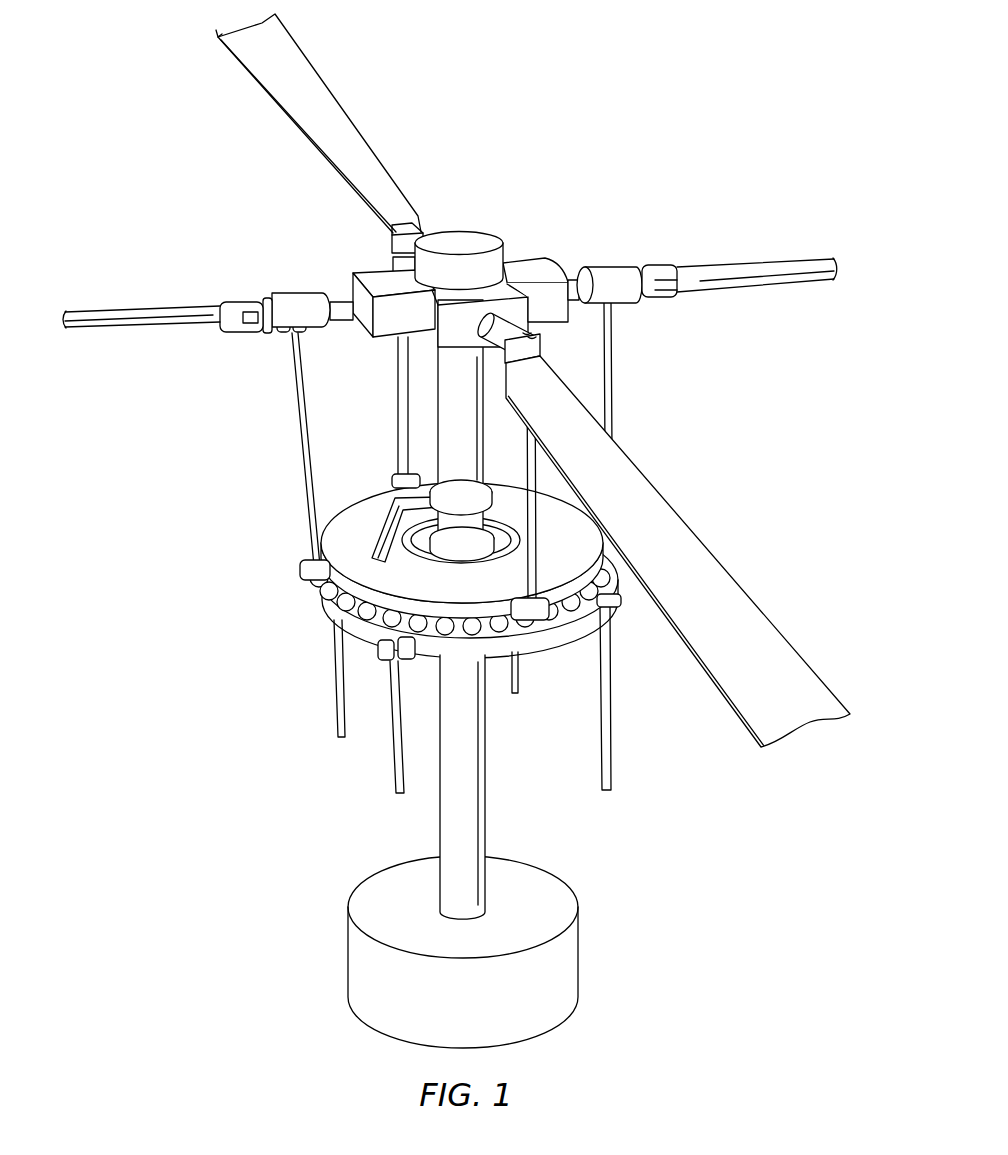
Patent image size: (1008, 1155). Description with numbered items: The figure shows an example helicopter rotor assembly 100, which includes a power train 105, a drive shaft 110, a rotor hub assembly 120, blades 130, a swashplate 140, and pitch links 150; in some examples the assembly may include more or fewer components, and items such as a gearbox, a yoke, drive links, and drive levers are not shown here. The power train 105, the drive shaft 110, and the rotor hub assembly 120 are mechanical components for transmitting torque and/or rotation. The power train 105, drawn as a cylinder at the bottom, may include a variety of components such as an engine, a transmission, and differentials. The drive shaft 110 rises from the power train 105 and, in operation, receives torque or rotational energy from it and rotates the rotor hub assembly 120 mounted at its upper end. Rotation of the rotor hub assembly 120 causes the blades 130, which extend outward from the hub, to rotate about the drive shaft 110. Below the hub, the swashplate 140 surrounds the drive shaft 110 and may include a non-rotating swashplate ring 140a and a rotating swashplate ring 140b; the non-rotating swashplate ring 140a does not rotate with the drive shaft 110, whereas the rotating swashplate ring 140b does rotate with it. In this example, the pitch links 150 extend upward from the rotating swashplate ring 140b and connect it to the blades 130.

The helicopter rotor assembly 100 is at (639, 78).
The power train 105 is at (451, 1031).
The drive shaft 110 is at (487, 742).
The rotor hub assembly 120 is at (547, 268).
The blades 130 is at (343, 132).
The swashplate 140 is at (282, 547).
The non-rotating swashplate ring 140a is at (330, 608).
The rotating swashplate ring 140b is at (363, 508).
The pitch links 150 is at (612, 368).